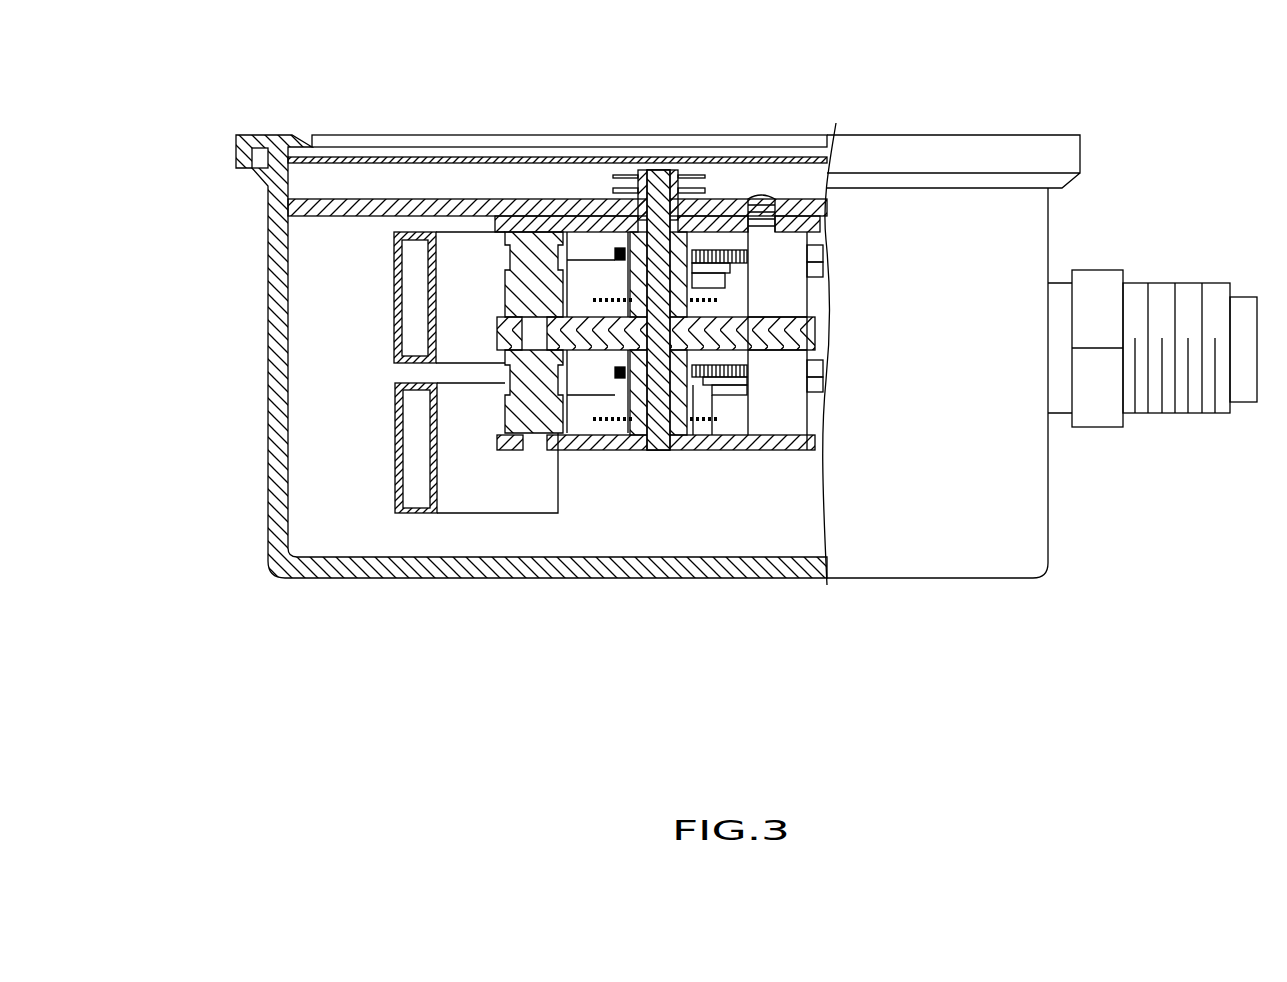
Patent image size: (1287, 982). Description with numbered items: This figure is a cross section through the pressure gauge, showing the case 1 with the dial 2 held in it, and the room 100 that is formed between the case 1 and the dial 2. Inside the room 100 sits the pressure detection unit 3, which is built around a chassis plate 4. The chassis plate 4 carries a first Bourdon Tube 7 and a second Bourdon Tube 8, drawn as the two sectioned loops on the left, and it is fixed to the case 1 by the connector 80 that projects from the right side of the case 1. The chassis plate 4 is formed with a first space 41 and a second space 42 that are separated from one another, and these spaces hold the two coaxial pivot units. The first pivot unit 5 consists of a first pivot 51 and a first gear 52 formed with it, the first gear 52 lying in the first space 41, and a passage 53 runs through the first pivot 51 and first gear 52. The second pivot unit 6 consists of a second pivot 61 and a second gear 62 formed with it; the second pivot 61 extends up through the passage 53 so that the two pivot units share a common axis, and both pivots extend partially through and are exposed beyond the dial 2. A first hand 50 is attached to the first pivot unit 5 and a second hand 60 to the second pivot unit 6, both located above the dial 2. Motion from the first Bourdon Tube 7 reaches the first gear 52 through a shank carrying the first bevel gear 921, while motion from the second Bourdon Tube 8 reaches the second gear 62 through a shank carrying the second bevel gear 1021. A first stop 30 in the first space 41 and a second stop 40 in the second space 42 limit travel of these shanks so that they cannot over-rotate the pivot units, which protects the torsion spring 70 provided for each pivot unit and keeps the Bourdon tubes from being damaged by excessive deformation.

The case 1 is at (1110, 203).
The dial 2 is at (345, 199).
The pressure detection unit 3 is at (697, 379).
The chassis plate 4 is at (777, 450).
The first pivot unit 5 is at (746, 130).
The second pivot unit 6 is at (625, 392).
The first Bourdon Tube 7 is at (393, 265).
The second Bourdon Tube 8 is at (395, 420).
The first stop 30 is at (797, 298).
The second stop 40 is at (793, 423).
The first space 41 is at (573, 228).
The second space 42 is at (575, 428).
The first hand 50 is at (637, 183).
The first pivot 51 is at (700, 208).
The first gear 52 is at (733, 232).
The passage 53 is at (690, 283).
The second hand 60 is at (665, 260).
The second pivot 61 is at (628, 325).
The second gear 62 is at (652, 398).
The torsion spring 70 is at (595, 300).
The connector 80 is at (1190, 283).
The room 100 is at (316, 520).
The first bevel gear 921 is at (747, 257).
The second bevel gear 1021 is at (733, 372).